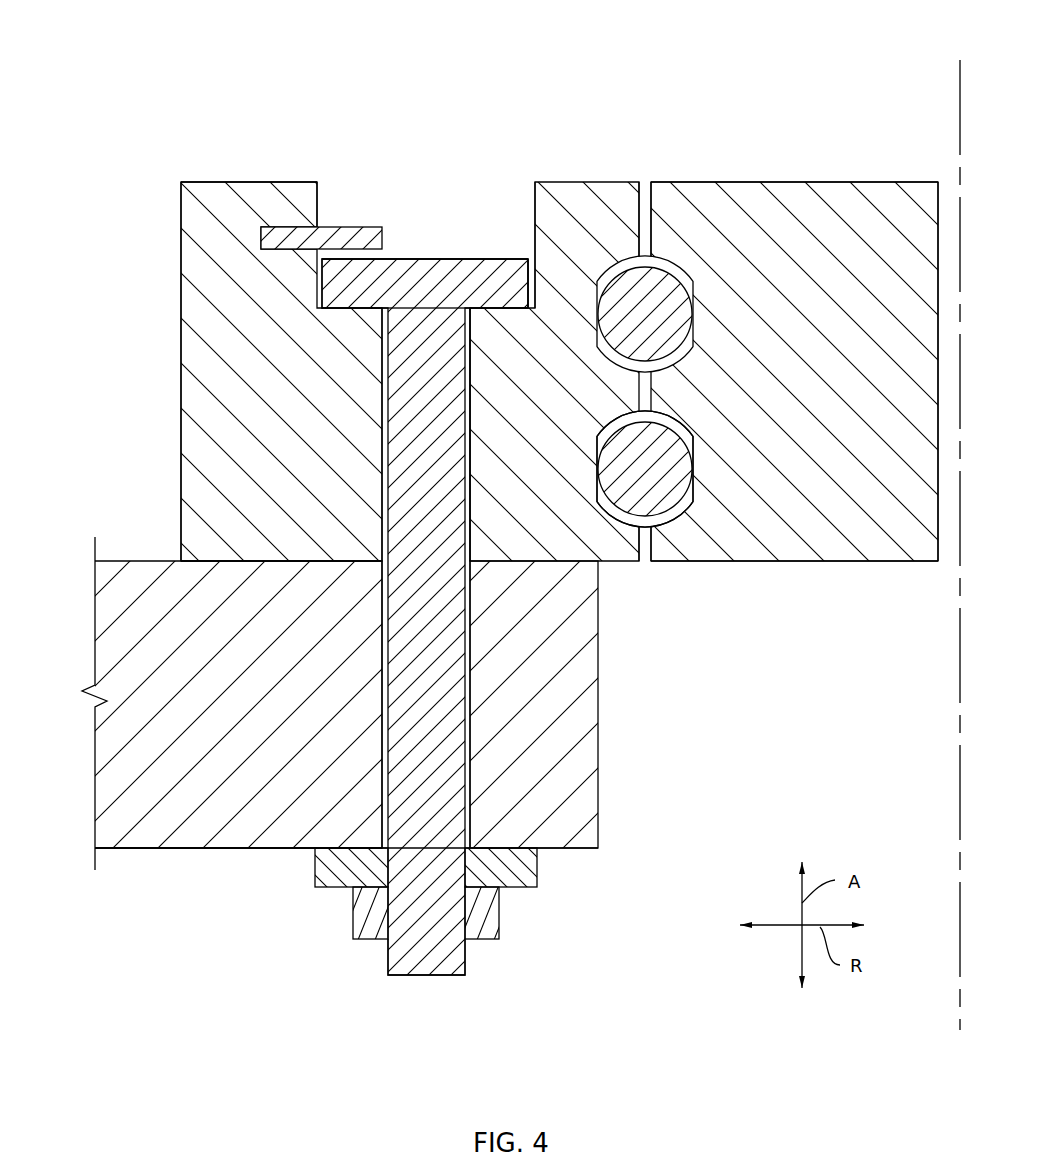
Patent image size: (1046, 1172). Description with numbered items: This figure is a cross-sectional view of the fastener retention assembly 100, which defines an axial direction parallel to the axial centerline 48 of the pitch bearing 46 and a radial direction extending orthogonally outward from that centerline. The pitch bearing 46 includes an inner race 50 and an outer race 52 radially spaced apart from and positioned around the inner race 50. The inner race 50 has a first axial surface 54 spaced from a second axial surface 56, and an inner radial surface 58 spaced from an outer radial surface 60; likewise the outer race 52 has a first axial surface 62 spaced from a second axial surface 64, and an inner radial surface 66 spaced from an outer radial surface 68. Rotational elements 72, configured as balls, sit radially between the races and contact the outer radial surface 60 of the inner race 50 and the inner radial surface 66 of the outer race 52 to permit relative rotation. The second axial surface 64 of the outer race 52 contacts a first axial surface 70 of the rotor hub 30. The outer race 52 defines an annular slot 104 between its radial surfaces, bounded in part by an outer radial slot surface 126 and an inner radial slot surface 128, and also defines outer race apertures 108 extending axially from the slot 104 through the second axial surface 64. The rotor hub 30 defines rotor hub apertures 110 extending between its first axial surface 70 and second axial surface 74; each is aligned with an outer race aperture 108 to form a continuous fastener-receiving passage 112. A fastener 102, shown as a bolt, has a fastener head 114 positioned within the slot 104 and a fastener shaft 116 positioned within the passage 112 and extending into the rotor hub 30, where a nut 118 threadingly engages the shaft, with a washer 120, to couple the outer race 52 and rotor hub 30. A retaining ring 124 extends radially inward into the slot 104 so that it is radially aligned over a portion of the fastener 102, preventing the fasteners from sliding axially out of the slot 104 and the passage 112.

The fastener retention assembly 100 is at (523, 586).
The fastener 102 is at (432, 978).
The annular slot 104 is at (450, 193).
The outer race aperture 108 is at (473, 508).
The rotor hub aperture 110 is at (472, 755).
The fastener-receiving passage 112 is at (380, 643).
The fastener head 114 is at (488, 258).
The fastener shaft 116 is at (388, 960).
The nut 118 is at (499, 915).
The washer 120 is at (537, 872).
The retaining ring 124 is at (343, 227).
The outer radial slot surface 126 is at (318, 205).
The inner radial slot surface 128 is at (535, 255).
The rotor hub 30 is at (197, 853).
The pitch bearing 46 is at (645, 146).
The axial centerline 48 is at (960, 103).
The inner race 50 is at (763, 160).
The outer race 52 is at (143, 372).
The first axial surface of the inner race 54 is at (802, 182).
The second axial surface of the inner race 56 is at (815, 561).
The inner radial surface of the inner race 58 is at (938, 207).
The outer radial surface of the inner race 60 is at (652, 562).
The first axial surface of the outer race 62 is at (242, 182).
The second axial surface of the outer race 64 is at (223, 560).
The inner radial surface of the outer race 66 is at (640, 565).
The outer radial surface of the outer race 68 is at (181, 265).
The first axial surface of the rotor hub 70 is at (140, 561).
The rotational element 72 is at (645, 258).
The second axial surface of the rotor hub 74 is at (270, 848).